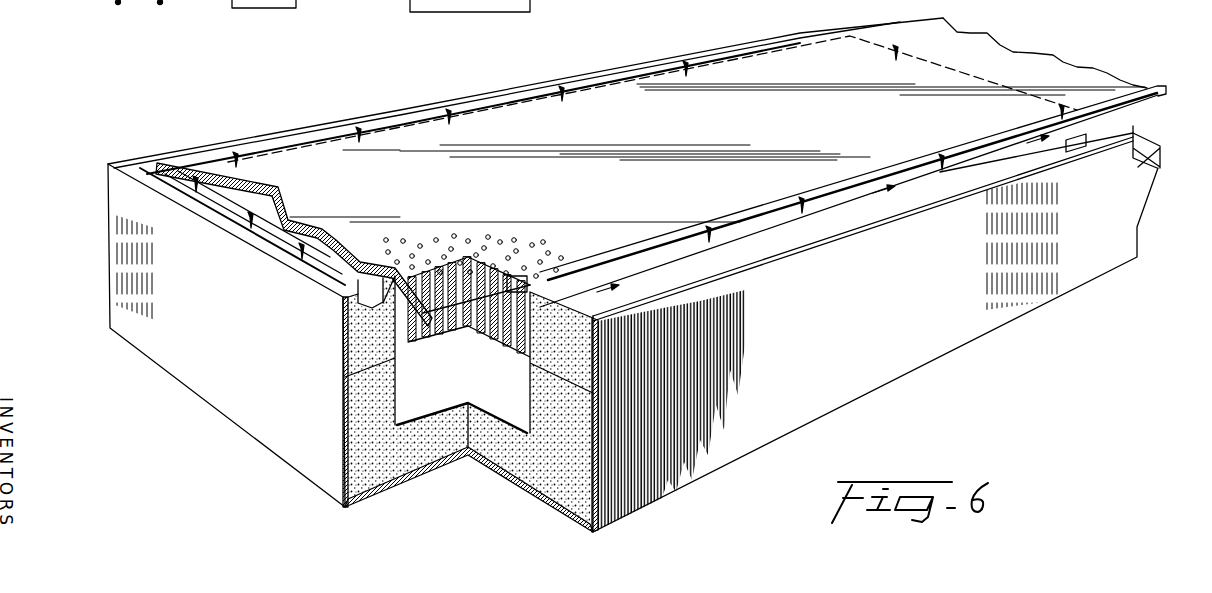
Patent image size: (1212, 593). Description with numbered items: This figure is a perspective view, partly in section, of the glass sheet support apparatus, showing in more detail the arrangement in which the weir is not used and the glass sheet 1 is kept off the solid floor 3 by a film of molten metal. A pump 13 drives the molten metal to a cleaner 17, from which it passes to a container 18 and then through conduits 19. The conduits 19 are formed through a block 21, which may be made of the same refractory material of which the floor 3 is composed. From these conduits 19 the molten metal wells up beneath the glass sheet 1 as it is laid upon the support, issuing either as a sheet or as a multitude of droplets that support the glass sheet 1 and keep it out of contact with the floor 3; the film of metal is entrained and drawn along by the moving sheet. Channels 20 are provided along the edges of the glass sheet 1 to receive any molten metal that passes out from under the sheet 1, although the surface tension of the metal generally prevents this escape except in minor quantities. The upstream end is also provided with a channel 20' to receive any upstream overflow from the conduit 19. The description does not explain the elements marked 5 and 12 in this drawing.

The glass sheet 1 is at (200, 170).
The floor 3 is at (250, 207).
The ice surface 5 is at (855, 70).
The connecting bracket 12 is at (1148, 157).
The pump 13 is at (487, 8).
The cleaner 17 is at (266, 8).
The container 18 is at (500, 378).
The conduits 19 is at (430, 238).
The channels 20 is at (853, 206).
The channel 20' is at (405, 329).
The block 21 is at (431, 344).